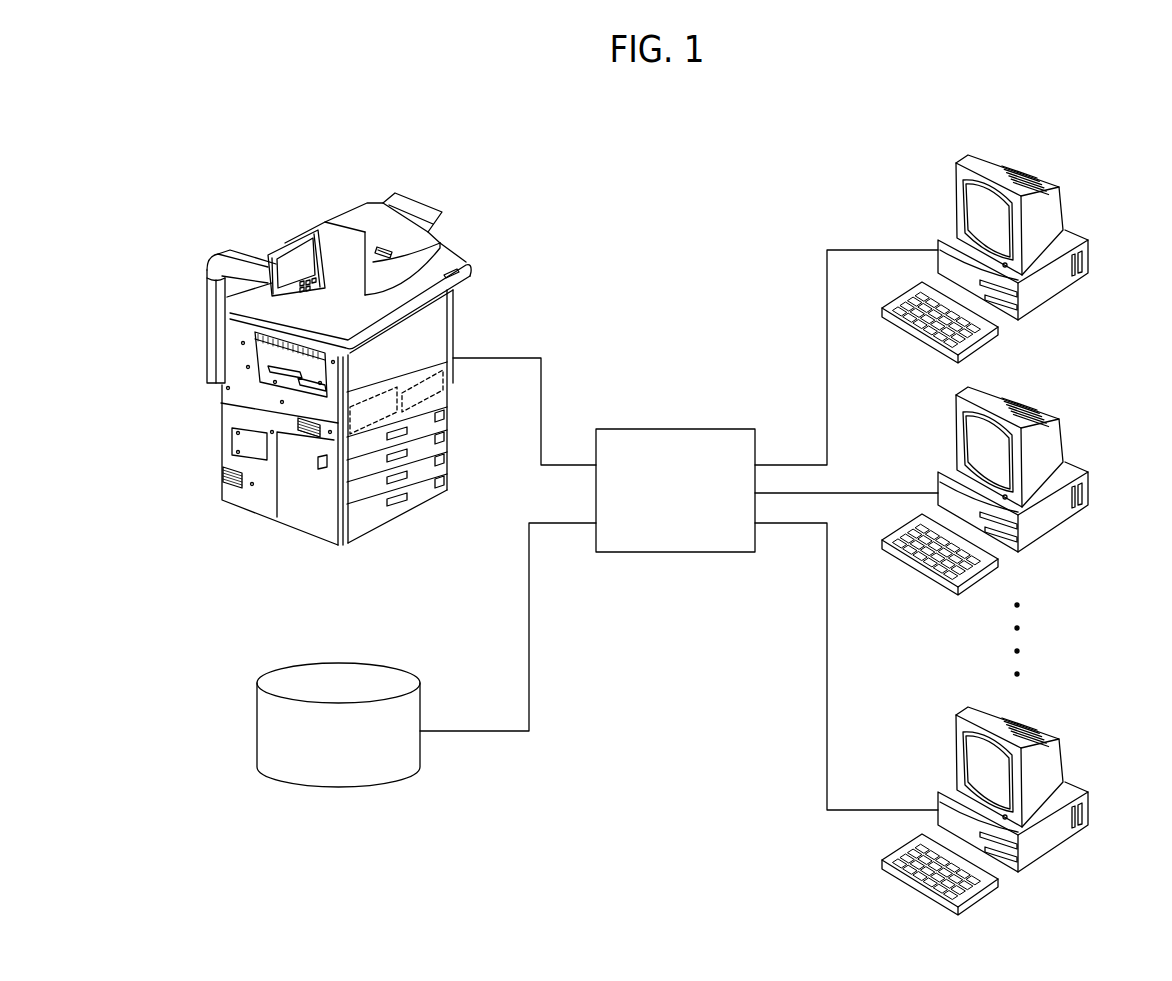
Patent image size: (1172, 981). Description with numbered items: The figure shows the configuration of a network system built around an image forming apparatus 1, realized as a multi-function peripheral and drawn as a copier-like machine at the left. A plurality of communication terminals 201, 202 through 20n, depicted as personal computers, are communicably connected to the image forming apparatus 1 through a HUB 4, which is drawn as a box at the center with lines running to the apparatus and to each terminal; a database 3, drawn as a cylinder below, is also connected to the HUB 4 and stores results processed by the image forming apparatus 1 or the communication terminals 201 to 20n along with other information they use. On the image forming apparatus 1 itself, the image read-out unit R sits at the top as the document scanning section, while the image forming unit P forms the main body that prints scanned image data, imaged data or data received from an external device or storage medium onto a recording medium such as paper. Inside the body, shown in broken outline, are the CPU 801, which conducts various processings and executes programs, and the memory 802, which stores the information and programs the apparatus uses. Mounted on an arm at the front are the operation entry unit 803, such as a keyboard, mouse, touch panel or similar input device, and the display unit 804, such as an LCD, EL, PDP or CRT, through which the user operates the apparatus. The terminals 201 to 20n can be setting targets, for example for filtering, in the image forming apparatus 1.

The image forming apparatus 1 is at (338, 365).
The database 3 is at (290, 772).
The HUB 4 is at (674, 429).
The communication terminal 201 is at (1068, 208).
The communication terminal 202 is at (1068, 443).
The communication terminal 20n is at (1068, 763).
The CPU 801 is at (380, 430).
The memory 802 is at (452, 390).
The operation entry unit 803 is at (300, 298).
The display unit 804 is at (298, 262).
The image read-out unit R is at (455, 243).
The image forming unit P is at (424, 330).